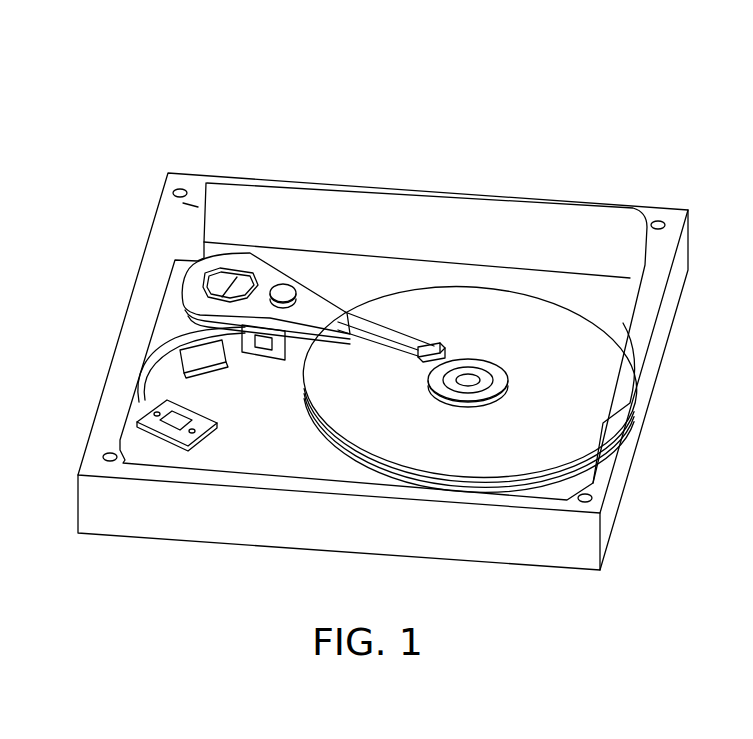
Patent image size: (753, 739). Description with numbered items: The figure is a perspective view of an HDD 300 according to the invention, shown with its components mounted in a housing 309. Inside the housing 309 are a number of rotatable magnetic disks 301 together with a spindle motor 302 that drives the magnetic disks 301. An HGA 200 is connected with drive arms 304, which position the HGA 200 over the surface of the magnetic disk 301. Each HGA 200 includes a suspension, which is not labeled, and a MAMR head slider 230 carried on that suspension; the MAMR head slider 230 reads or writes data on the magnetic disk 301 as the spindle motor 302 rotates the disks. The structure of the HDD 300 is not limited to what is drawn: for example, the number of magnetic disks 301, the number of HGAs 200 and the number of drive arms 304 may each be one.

The HDD 300 is at (68, 40).
The housing 309 is at (625, 248).
The magnetic disks 301 is at (540, 323).
The spindle motor 302 is at (468, 380).
The drive arms 304 is at (307, 297).
The HGA 200 is at (372, 330).
The MAMR head slider 230 is at (433, 347).